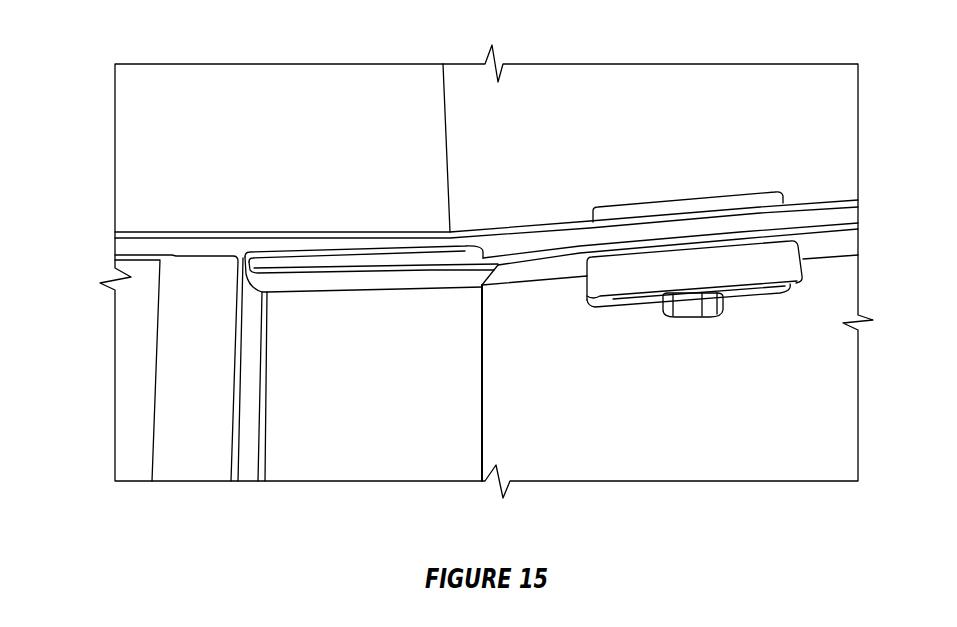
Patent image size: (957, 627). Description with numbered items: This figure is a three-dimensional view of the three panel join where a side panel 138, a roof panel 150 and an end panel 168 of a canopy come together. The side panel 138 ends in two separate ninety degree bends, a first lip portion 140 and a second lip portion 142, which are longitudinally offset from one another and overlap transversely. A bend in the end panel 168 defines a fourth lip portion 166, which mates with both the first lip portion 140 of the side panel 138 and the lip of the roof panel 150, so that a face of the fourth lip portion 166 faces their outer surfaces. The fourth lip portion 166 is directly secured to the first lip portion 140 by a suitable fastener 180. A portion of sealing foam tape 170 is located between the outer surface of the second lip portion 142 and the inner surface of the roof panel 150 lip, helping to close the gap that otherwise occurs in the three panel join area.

The end panel 168 is at (302, 152).
The fourth lip portion 166 is at (535, 221).
The roof panel 150 is at (152, 348).
The sealing foam tape 170 is at (350, 258).
The side panel 138 is at (404, 396).
The second lip portion 142 is at (462, 293).
The first lip portion 140 is at (524, 288).
The fastener 180 is at (698, 322).